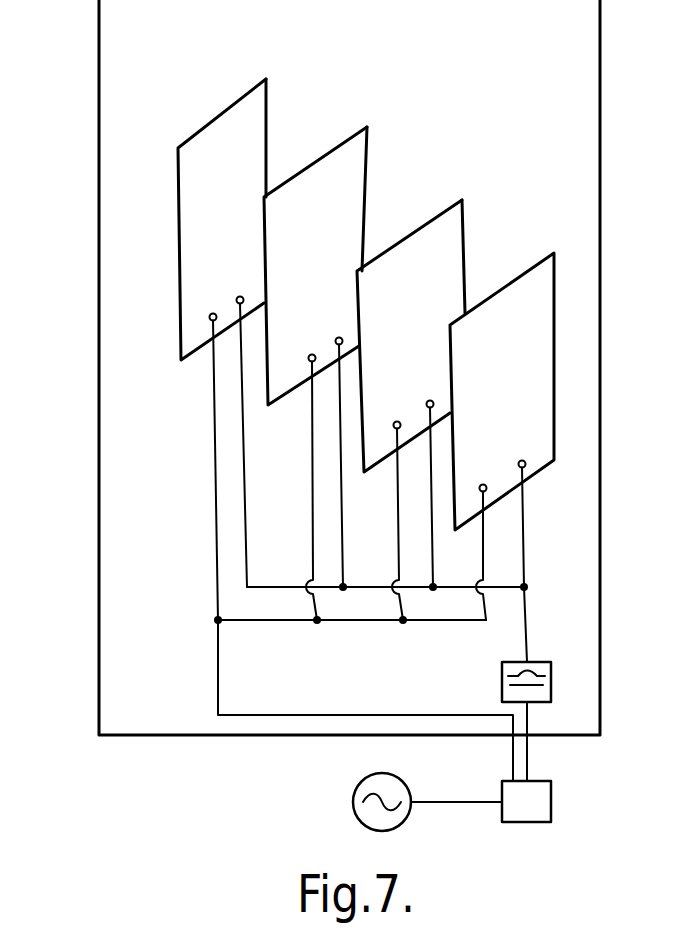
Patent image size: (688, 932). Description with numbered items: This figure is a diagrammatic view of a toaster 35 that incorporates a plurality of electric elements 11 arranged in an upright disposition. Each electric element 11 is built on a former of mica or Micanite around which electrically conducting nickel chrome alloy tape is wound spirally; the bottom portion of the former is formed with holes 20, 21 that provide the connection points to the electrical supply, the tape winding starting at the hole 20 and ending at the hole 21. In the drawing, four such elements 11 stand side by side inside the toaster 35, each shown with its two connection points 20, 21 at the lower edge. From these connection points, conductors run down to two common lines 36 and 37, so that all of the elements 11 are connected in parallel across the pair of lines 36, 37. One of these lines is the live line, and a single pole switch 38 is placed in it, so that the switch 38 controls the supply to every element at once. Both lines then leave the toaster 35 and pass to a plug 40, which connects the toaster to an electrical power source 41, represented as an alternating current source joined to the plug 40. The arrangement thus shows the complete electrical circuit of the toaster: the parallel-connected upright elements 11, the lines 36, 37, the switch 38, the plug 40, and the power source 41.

The toaster 35 is at (99, 110).
The electric element 11 is at (250, 142).
The hole 20 is at (525, 467).
The hole 21 is at (486, 490).
The line 36 is at (286, 585).
The line 37 is at (296, 622).
The single pole switch 38 is at (502, 686).
The plug 40 is at (552, 803).
The electrical power source 41 is at (400, 830).